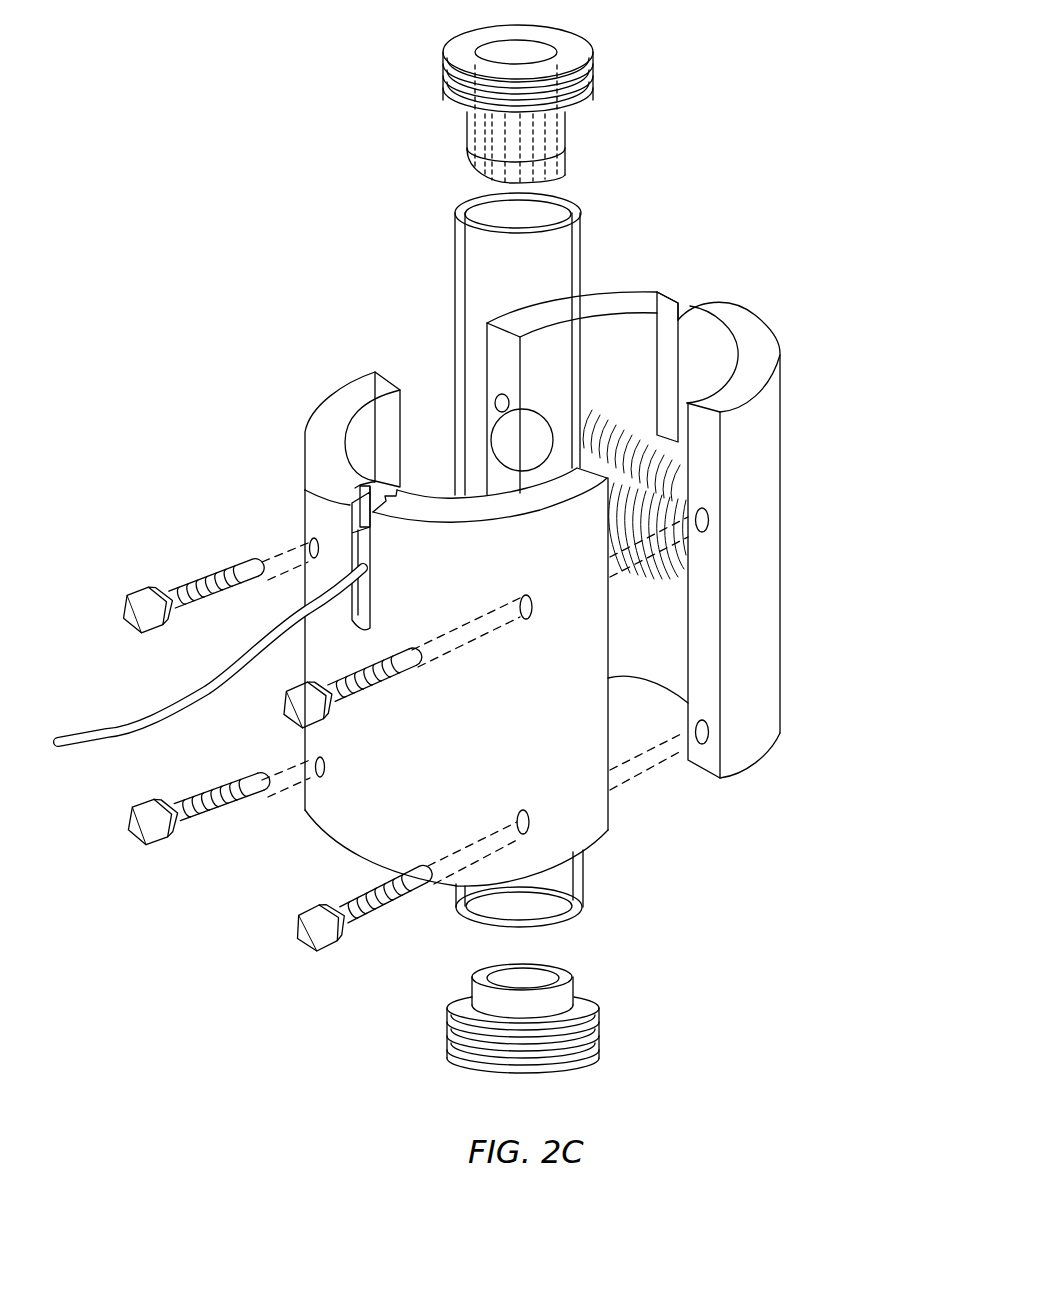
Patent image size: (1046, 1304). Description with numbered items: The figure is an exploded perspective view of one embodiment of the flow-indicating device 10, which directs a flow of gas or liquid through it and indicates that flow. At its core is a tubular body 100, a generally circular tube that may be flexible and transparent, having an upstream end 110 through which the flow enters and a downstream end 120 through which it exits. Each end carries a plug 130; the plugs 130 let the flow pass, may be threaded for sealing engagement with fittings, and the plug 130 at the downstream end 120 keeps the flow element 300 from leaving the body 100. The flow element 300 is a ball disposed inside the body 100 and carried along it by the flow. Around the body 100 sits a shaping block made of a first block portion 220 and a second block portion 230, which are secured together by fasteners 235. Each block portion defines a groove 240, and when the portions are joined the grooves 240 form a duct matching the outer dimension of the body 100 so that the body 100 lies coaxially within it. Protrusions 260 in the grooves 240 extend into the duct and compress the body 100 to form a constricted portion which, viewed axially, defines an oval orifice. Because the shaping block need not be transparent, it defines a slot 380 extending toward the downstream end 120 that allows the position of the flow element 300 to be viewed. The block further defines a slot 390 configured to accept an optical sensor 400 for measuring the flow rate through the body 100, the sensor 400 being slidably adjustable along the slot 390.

The flow-indicating device 10 is at (737, 218).
The tubular body 100 is at (455, 260).
The upstream end 110 is at (575, 924).
The downstream end 120 is at (552, 215).
The plug 130 is at (575, 54).
The first block portion 220 is at (577, 822).
The second block portion 230 is at (750, 707).
The fasteners 235 is at (140, 615).
The groove 240 is at (387, 446).
The protrusion 260 is at (642, 490).
The flow element 300 is at (522, 445).
The slot 380 is at (690, 308).
The slot 390 is at (353, 518).
The optical sensor 400 is at (362, 551).